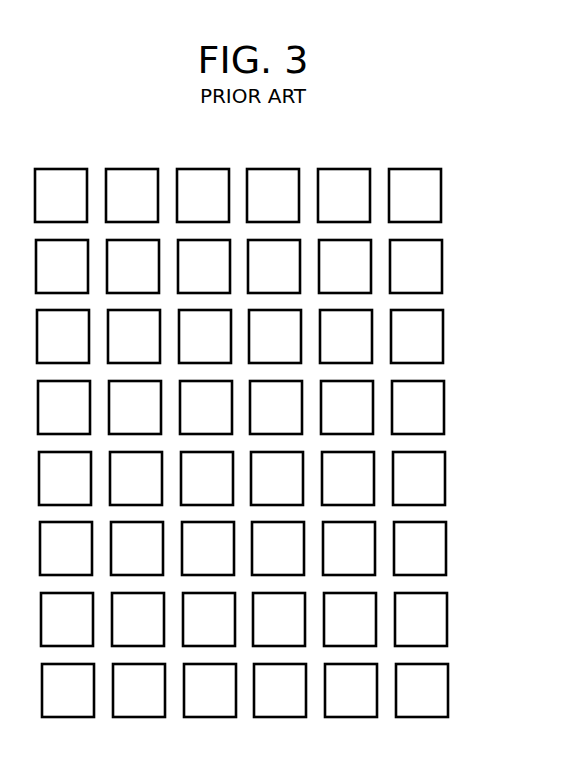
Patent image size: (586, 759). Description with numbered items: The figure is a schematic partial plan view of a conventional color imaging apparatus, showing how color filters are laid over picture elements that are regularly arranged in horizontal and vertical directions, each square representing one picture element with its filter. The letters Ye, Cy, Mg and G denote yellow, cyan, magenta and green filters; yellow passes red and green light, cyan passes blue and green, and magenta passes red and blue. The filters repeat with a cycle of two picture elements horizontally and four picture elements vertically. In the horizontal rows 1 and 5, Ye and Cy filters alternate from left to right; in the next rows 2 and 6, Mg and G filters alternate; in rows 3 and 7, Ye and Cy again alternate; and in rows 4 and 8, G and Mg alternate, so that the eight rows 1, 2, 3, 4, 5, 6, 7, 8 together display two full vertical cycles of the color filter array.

The horizontal row l1 of picture elements 1 is at (283, 195).
The horizontal row l2 2 is at (284, 266).
The horizontal row l3 3 is at (284, 336).
The horizontal row l4 4 is at (285, 407).
The horizontal row l5 5 is at (286, 478).
The horizontal row l6 6 is at (287, 548).
The horizontal row l7 7 is at (287, 619).
The horizontal row l8 8 is at (288, 690).